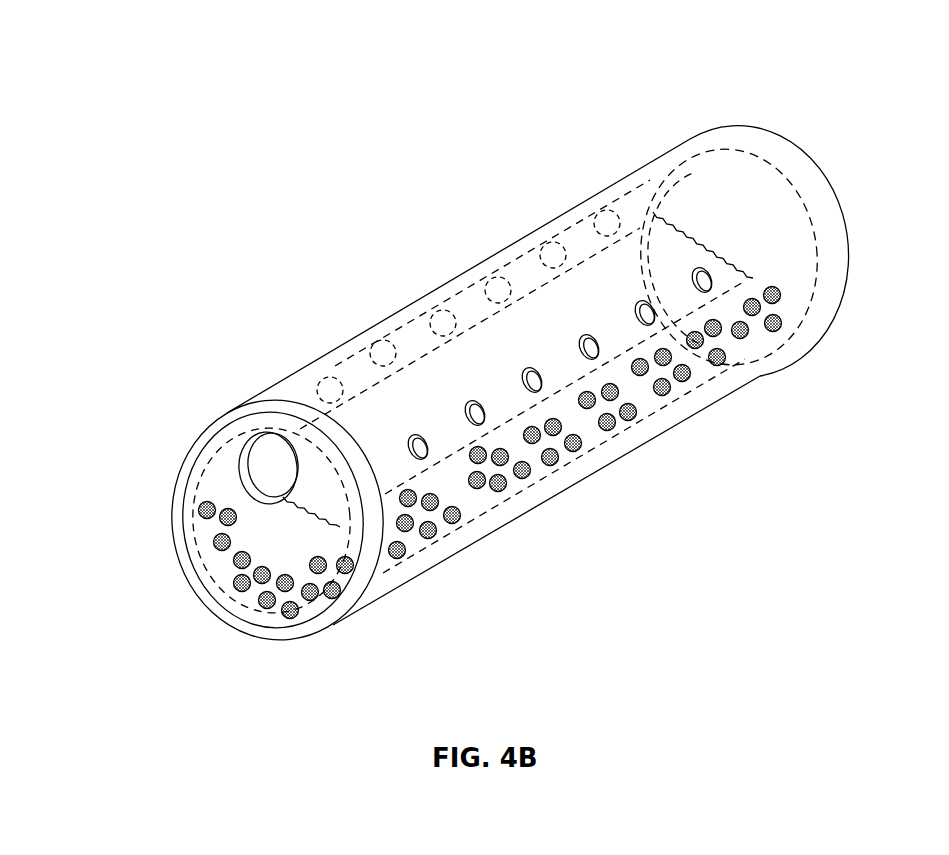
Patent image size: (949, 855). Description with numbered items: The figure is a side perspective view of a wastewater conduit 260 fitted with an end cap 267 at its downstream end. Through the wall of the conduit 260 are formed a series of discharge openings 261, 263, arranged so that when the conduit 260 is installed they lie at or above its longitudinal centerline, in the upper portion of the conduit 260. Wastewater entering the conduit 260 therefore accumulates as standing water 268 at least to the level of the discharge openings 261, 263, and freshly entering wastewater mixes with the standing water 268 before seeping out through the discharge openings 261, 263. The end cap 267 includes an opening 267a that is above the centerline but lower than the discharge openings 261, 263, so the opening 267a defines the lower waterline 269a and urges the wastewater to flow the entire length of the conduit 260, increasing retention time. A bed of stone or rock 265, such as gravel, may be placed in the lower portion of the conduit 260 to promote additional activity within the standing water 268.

The conduit 260 is at (700, 132).
The discharge openings 261 is at (598, 213).
The discharge openings 263 is at (427, 459).
The bed of stone or rock 265 is at (437, 540).
The end cap 267 is at (222, 493).
The opening 267a is at (240, 445).
The standing water 268 is at (413, 568).
The lower waterline 269a is at (735, 262).